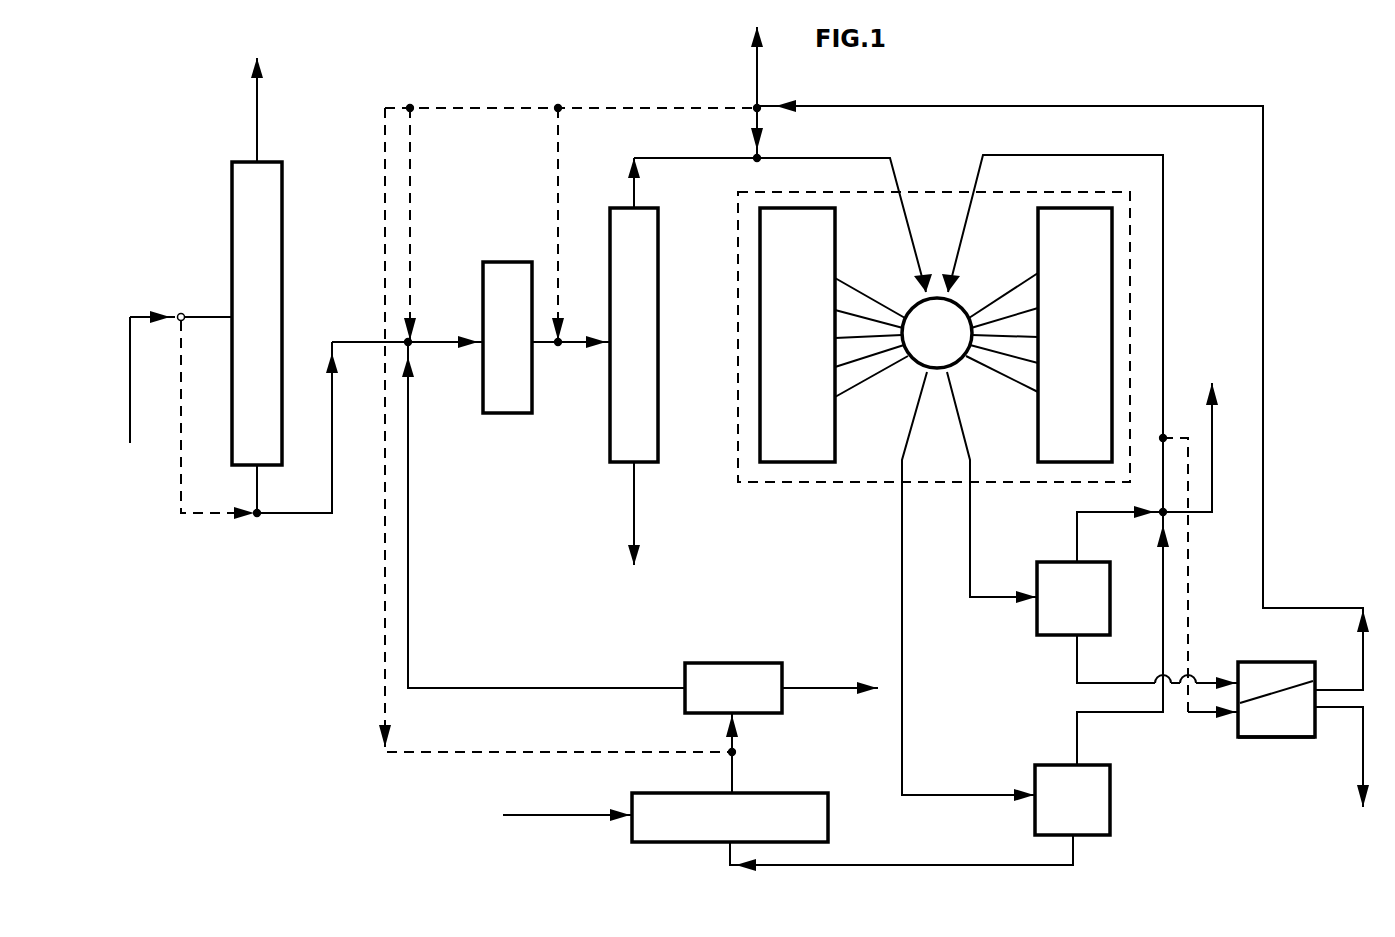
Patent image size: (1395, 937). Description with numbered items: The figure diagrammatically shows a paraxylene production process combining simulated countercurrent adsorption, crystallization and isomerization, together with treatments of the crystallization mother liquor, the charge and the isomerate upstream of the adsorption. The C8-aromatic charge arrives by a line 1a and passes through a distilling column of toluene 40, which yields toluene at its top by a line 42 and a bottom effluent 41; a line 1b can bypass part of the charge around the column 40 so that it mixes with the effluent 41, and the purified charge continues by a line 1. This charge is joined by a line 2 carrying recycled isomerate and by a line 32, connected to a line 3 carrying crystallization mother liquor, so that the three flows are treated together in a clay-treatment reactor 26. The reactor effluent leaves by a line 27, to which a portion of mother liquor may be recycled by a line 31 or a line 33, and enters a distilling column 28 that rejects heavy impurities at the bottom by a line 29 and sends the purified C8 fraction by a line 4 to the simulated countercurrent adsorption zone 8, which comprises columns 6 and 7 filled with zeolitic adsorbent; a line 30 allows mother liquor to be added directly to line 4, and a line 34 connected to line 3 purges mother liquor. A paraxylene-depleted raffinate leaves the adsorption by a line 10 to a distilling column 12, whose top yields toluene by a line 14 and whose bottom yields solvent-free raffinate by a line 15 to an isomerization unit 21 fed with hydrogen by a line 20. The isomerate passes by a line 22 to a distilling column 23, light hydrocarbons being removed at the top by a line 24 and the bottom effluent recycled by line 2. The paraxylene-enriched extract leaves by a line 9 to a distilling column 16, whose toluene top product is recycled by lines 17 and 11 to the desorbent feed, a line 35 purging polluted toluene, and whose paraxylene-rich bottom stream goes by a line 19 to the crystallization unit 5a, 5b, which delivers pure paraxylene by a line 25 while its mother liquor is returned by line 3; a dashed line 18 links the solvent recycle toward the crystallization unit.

The line 1 is at (357, 338).
The line 1a is at (133, 312).
The line 1b is at (181, 470).
The line 2 is at (412, 375).
The line 3 is at (1264, 312).
The line 4 is at (684, 160).
The crystallization unit 5a is at (1252, 672).
The crystallization unit 5b is at (1262, 722).
The column 6 is at (805, 352).
The column 7 is at (1082, 346).
The simulated countercurrent adsorption zone 8 is at (945, 230).
The line 9 is at (970, 528).
The line 10 is at (902, 528).
The line 11 is at (1165, 296).
The distilling column 12 is at (1086, 814).
The line 14 is at (1077, 728).
The line 15 is at (890, 865).
The distilling column 16 is at (1087, 612).
The line 17 is at (1077, 530).
The line 18 is at (1184, 728).
The line 19 is at (1077, 670).
The line 20 is at (527, 815).
The isomerization unit 21 is at (744, 832).
The line 22 is at (735, 770).
The distilling column 23 is at (748, 704).
The line 24 is at (822, 692).
The line 25 is at (1360, 765).
The clay-treatment reactor 26 is at (522, 352).
The line 27 is at (568, 346).
The distilling column 28 is at (648, 352).
The line 29 is at (634, 506).
The line 30 is at (757, 136).
The line 31 is at (556, 178).
The line 32 is at (410, 182).
The line 33 is at (385, 162).
The line 34 is at (757, 74).
The line 35 is at (1215, 388).
The distilling column of toluene 40 is at (271, 331).
The effluent 41 is at (257, 495).
The line 42 is at (257, 101).